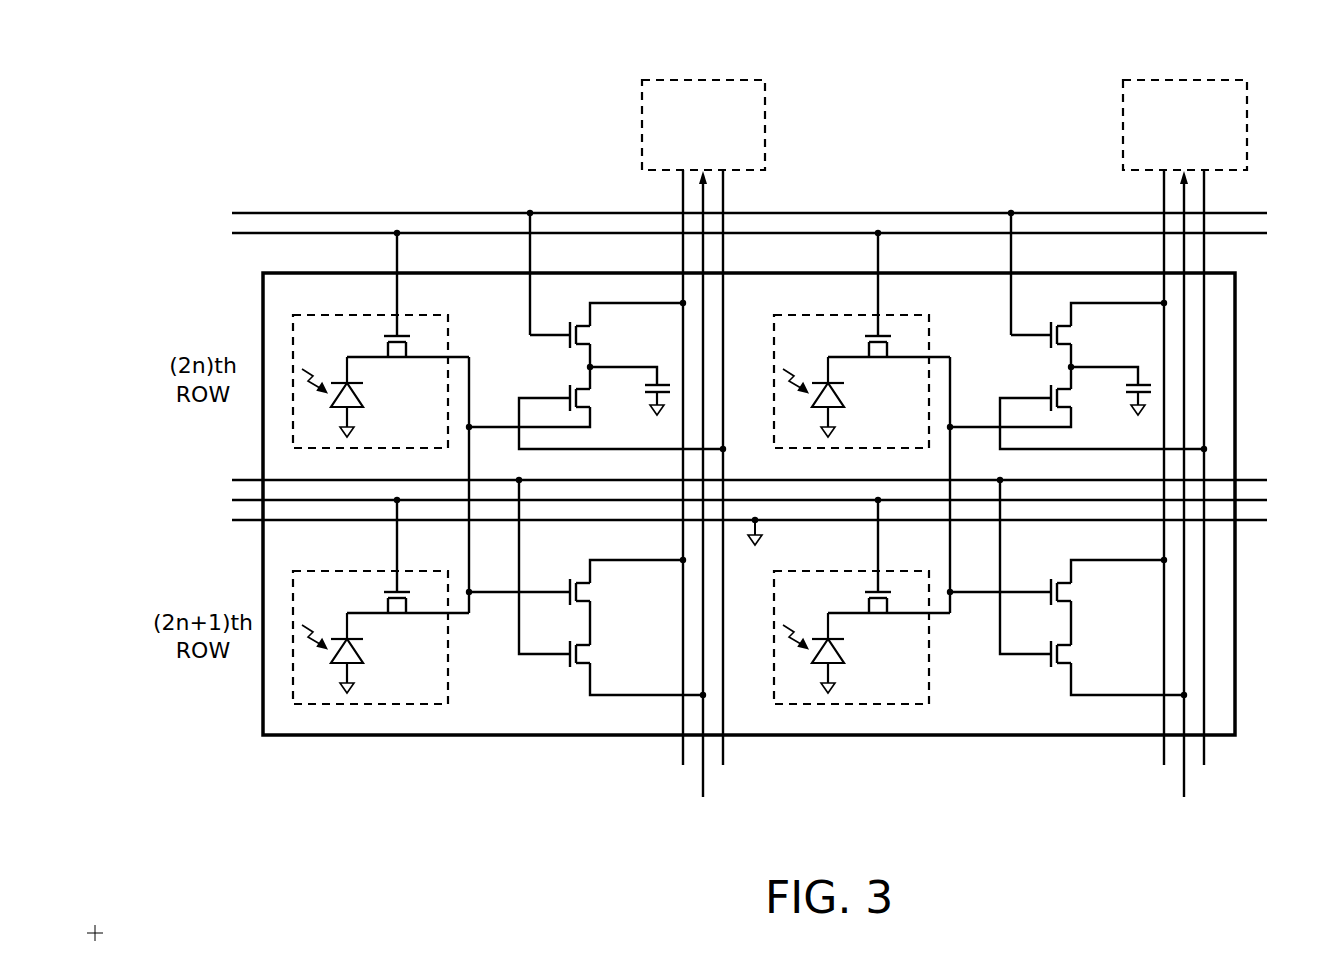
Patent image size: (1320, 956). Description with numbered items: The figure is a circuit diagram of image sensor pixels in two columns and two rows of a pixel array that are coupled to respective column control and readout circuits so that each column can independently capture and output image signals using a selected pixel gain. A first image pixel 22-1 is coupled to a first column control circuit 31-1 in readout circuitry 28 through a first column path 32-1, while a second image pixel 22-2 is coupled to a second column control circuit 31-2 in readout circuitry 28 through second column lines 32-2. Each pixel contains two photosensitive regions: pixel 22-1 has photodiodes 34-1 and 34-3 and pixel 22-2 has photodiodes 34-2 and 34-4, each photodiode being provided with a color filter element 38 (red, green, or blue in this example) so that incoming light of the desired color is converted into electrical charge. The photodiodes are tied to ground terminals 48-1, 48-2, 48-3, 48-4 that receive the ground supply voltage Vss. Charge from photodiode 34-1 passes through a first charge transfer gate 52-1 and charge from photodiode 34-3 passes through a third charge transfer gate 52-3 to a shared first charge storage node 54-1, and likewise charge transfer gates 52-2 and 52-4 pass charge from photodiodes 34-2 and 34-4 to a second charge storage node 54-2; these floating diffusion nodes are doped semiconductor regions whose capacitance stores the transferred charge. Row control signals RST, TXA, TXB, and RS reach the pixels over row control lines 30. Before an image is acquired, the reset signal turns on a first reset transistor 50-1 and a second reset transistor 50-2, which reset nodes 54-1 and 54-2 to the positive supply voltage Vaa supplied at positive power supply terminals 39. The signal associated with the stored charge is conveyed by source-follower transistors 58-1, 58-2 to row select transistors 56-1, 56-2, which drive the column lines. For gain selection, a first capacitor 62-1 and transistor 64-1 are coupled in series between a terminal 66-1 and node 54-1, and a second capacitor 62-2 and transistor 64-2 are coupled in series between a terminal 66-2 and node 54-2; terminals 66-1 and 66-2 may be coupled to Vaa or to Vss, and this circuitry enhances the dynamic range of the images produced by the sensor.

The first image pixel 22-1 is at (293, 833).
The second image pixel 22-2 is at (775, 833).
The readout circuitry 28 is at (941, 125).
The row control lines 30 is at (157, 198).
The first column control circuit 31-1 is at (644, 121).
The second column control circuit 31-2 is at (1124, 121).
The first column path 32-1 is at (640, 833).
The second column lines 32-2 is at (1247, 833).
The photodiode 34-1 is at (331, 381).
The photodiode 34-2 is at (812, 366).
The photodiode 34-3 is at (331, 637).
The photodiode 34-4 is at (812, 622).
The color filter element 38 is at (418, 313).
The positive power supply terminal 39 is at (682, 303).
The ground terminal 48-1 is at (350, 440).
The ground terminal 48-2 is at (805, 441).
The ground terminal 48-3 is at (350, 696).
The ground terminal 48-4 is at (805, 697).
The first reset transistor 50-1 is at (580, 324).
The second reset transistor 50-2 is at (1087, 290).
The first charge transfer gate 52-1 is at (389, 352).
The second charge transfer gate 52-2 is at (859, 305).
The third charge transfer gate 52-3 is at (389, 608).
The charge transfer gate 52-4 is at (859, 566).
The first charge storage node 54-1 is at (472, 428).
The second charge storage node 54-2 is at (978, 400).
The row select transistor 56-1 is at (581, 643).
The row select transistor 56-2 is at (1093, 600).
The source-follower transistor 58-1 is at (581, 581).
The source-follower transistor 58-2 is at (1058, 594).
The first capacitor 62-1 is at (660, 386).
The second capacitor 62-2 is at (1115, 364).
The transistor 64-1 is at (580, 386).
The transistor 64-2 is at (1078, 401).
The terminal 66-1 is at (660, 416).
The terminal 66-2 is at (1114, 418).